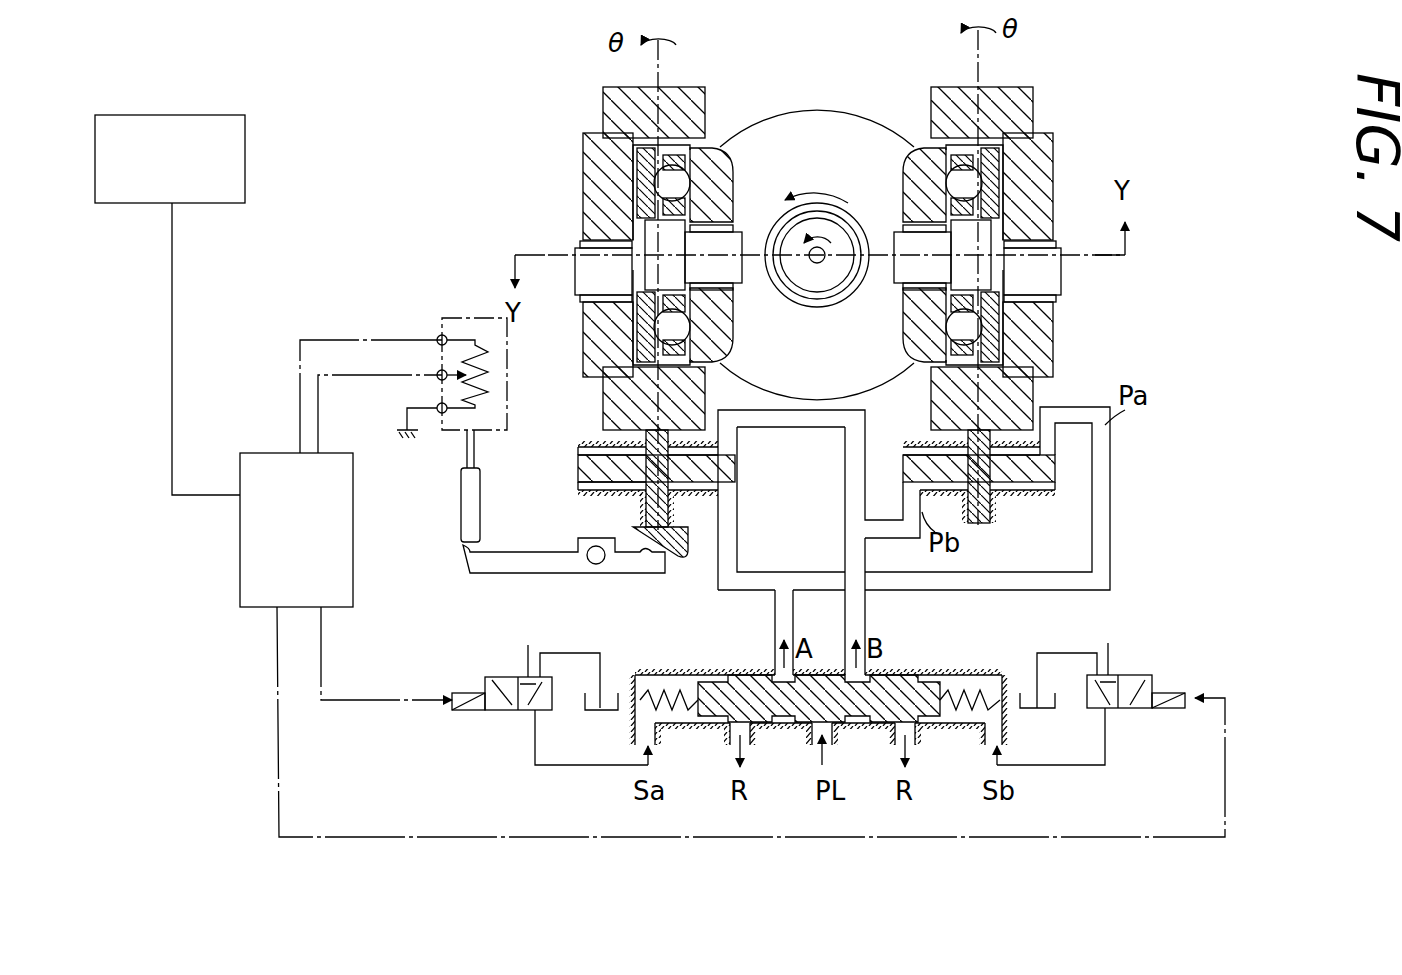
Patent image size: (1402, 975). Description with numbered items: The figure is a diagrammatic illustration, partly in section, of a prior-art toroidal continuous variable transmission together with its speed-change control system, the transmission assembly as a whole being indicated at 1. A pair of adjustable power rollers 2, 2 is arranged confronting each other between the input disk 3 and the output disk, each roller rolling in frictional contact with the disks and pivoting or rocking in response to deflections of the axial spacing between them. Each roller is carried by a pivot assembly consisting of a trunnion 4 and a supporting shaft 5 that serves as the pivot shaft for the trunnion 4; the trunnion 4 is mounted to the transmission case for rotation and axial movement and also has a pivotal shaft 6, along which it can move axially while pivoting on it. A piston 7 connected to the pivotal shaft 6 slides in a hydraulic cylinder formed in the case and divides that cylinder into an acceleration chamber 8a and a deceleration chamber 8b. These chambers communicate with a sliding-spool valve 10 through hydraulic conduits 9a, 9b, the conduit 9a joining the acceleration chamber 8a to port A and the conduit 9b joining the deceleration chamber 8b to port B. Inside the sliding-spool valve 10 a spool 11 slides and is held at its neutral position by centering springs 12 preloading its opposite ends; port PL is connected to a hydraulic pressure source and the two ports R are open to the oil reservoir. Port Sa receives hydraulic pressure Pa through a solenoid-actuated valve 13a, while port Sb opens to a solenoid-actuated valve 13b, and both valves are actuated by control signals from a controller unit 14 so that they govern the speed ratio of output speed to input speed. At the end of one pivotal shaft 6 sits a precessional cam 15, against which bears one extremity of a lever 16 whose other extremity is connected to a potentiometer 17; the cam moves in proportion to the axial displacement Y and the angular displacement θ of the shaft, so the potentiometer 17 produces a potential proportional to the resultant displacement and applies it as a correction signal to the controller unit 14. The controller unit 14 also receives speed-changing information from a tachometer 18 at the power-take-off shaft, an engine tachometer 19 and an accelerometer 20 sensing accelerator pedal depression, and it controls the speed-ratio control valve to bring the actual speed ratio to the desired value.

The rotary apparatus 1 is at (888, 96).
The adjustable power roller 2 is at (714, 152).
The input disk 3 is at (795, 160).
The trunnion 4 is at (596, 162).
The supporting shaft 5 is at (582, 268).
The pivotal shaft 6 is at (645, 517).
The piston 7 is at (802, 479).
The acceleration chamber 8a is at (594, 490).
The deceleration chamber 8b is at (612, 452).
The hydraulic conduit 9a is at (819, 542).
The hydraulic conduit 9b is at (856, 470).
The sliding-spool valve 10 is at (818, 673).
The spool 11 is at (822, 698).
The spring 12 is at (665, 692).
The solenoid-actuated valve 13a is at (492, 676).
The solenoid-actuated valve 13b is at (1145, 676).
The controller unit 14 is at (328, 562).
The precessional cam 15 is at (690, 560).
The lever 16 is at (545, 574).
The potentiometer 17 is at (484, 316).
The tachometer 18 is at (170, 159).
The engine tachometer 19 is at (170, 159).
The accelerometer 20 is at (170, 159).